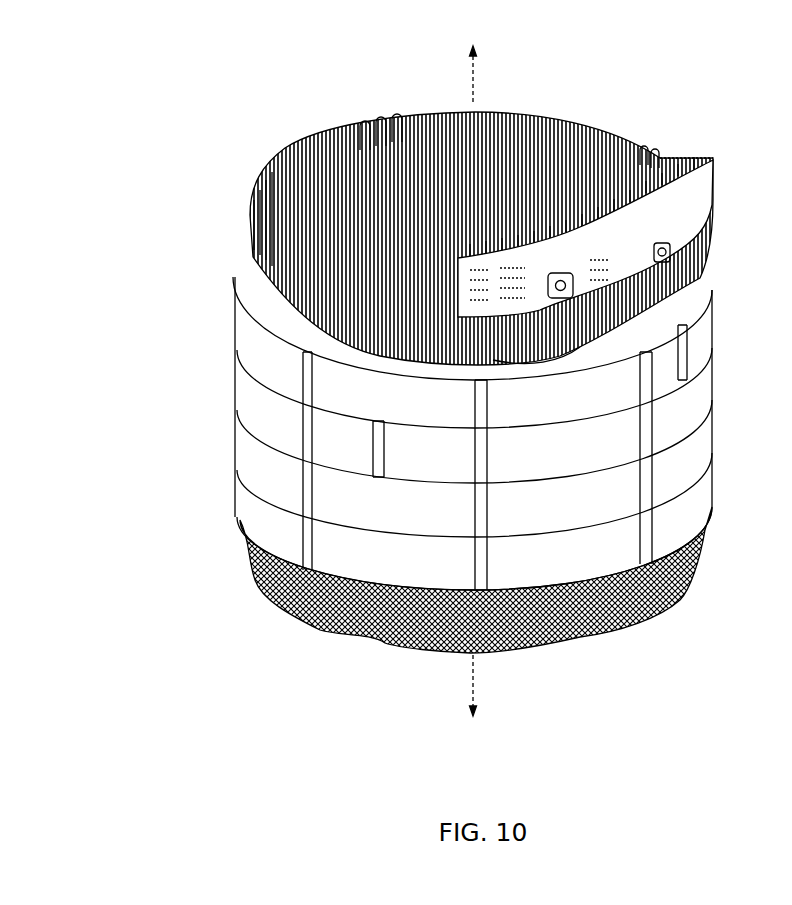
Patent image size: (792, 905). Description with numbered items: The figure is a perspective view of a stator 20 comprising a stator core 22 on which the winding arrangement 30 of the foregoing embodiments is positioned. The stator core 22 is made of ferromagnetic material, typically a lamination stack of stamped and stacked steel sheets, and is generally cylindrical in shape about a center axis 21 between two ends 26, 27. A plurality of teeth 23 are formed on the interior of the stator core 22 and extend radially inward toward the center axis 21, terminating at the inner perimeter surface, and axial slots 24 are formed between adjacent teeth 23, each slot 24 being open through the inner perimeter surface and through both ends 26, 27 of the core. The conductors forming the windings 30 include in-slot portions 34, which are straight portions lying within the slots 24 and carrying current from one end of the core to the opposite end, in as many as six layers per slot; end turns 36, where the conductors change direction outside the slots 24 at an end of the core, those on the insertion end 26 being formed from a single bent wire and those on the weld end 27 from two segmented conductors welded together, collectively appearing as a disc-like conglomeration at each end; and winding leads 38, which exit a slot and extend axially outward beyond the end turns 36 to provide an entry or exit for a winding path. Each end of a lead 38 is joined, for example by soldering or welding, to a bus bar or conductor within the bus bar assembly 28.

The stator 20 is at (167, 163).
The center axis 21 is at (473, 102).
The stator core 22 is at (236, 404).
The teeth 23 is at (373, 120).
The axial slots 24 is at (418, 117).
The insertion end of stator core 26 is at (703, 520).
The weld end of stator core 27 is at (680, 292).
The bus bar assembly 28 is at (706, 176).
The winding arrangement 30 is at (307, 127).
The in-slot portions 34 is at (580, 347).
The end turns 36 is at (250, 215).
The winding leads 38 is at (657, 147).